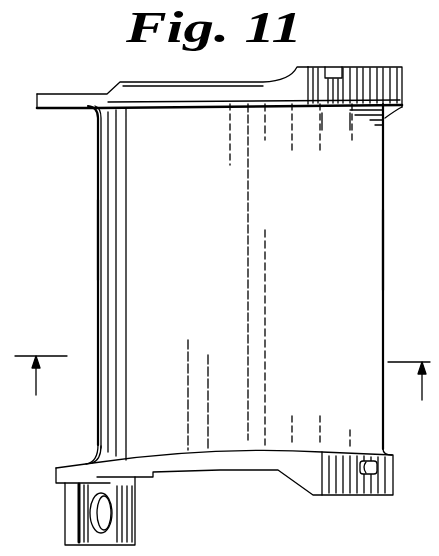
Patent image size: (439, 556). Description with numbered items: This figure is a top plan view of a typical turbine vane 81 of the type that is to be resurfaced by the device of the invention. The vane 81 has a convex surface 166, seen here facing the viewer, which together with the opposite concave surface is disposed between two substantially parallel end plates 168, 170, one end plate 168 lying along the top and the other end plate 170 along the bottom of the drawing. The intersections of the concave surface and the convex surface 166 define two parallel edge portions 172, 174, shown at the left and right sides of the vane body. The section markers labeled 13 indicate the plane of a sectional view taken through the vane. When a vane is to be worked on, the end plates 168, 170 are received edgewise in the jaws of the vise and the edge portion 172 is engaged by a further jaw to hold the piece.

The end plate 168 is at (62, 96).
The turbine vane 81 is at (365, 63).
The convex surface 166 is at (181, 224).
The edge portion 172 is at (97, 236).
The edge portion 174 is at (386, 253).
The end plate 170 is at (181, 466).
The section line 13- 13 is at (223, 393).